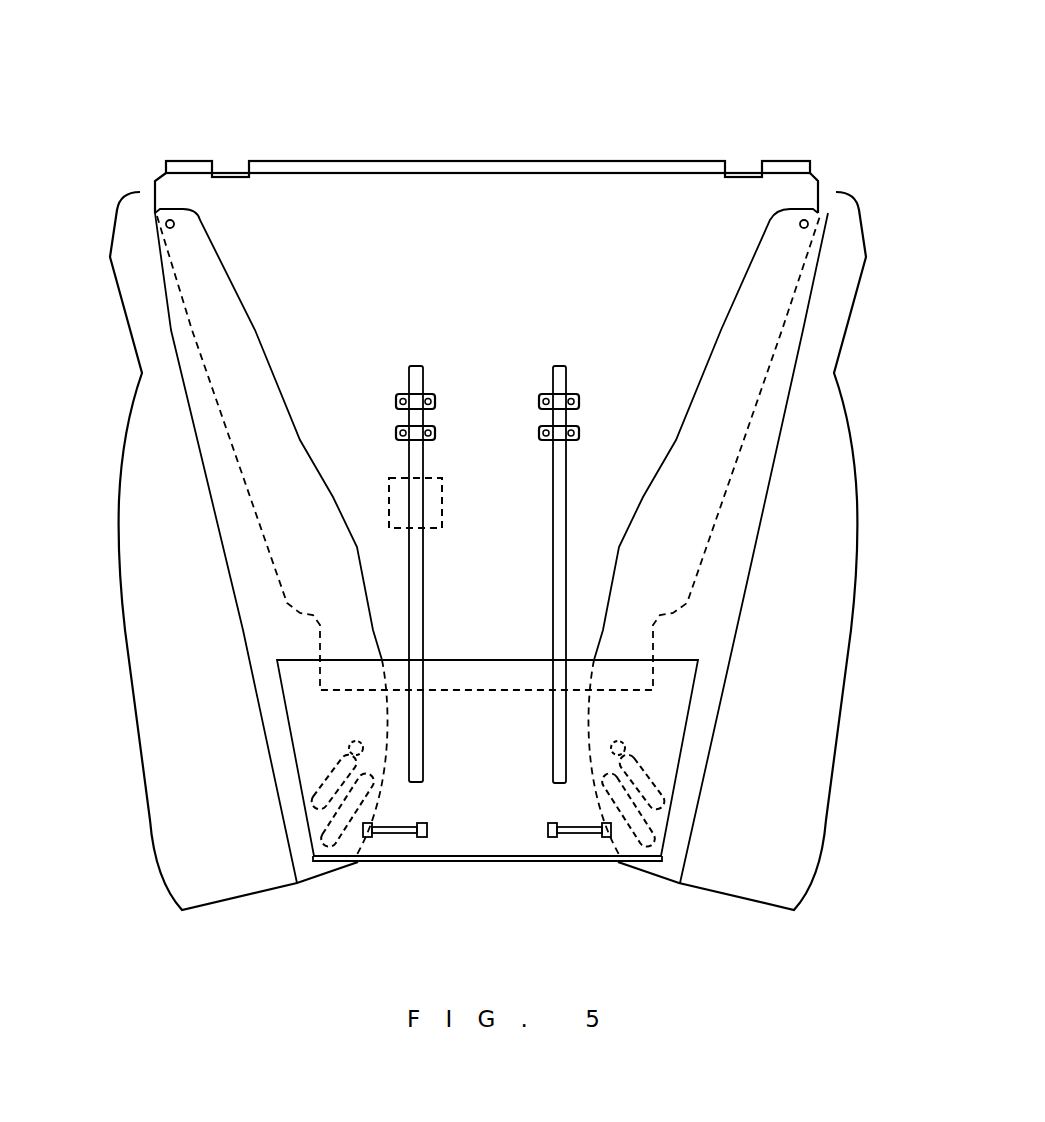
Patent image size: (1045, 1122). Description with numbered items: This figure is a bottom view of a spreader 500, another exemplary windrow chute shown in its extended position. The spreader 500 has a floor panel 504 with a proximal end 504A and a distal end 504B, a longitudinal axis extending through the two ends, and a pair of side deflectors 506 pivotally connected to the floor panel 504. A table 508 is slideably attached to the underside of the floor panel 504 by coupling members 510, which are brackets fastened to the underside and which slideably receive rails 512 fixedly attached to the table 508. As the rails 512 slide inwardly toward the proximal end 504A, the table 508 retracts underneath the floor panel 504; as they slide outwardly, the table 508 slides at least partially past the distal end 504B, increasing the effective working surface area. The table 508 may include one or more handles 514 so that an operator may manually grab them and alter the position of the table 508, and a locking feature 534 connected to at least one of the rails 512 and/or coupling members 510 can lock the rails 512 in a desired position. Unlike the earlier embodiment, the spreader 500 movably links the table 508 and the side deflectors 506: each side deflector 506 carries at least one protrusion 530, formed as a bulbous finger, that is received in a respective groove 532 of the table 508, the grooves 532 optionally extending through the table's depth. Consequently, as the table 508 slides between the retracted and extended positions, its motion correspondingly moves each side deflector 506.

The spreader 500 is at (844, 104).
The floor panel 504 is at (180, 161).
The proximal end 504A is at (408, 161).
The distal end 504B is at (528, 692).
The side deflector 506 is at (122, 478).
The table 508 is at (681, 765).
The coupling member 510 is at (579, 401).
The rail 512 is at (409, 580).
The handle 514 is at (572, 835).
The protrusion 530 is at (355, 742).
The groove 532 is at (325, 848).
The locking feature 534 is at (389, 503).